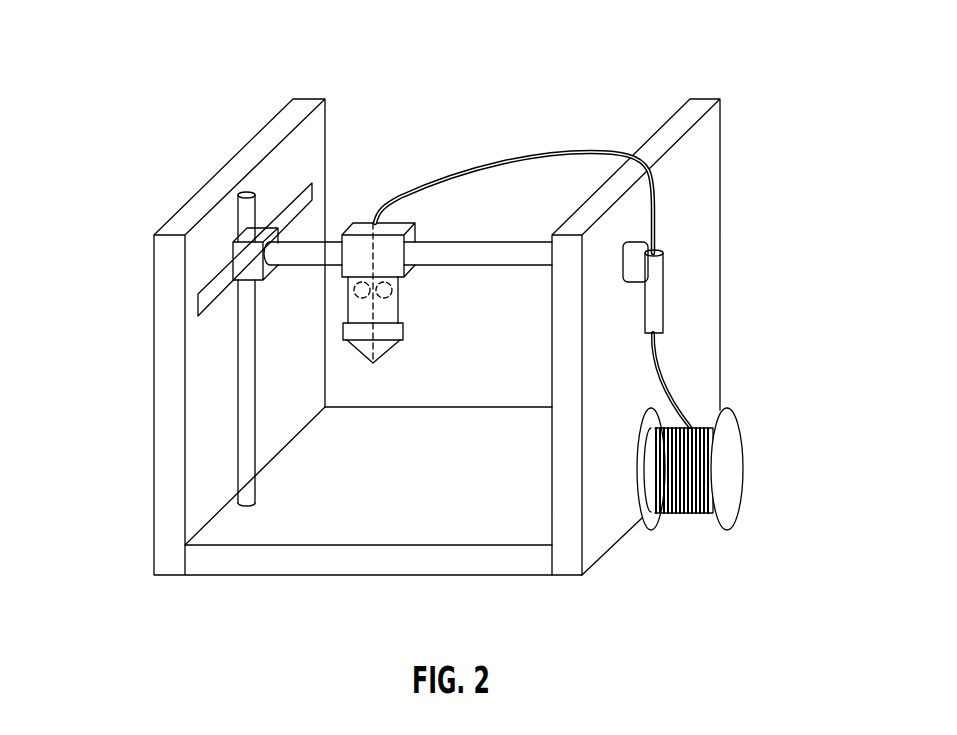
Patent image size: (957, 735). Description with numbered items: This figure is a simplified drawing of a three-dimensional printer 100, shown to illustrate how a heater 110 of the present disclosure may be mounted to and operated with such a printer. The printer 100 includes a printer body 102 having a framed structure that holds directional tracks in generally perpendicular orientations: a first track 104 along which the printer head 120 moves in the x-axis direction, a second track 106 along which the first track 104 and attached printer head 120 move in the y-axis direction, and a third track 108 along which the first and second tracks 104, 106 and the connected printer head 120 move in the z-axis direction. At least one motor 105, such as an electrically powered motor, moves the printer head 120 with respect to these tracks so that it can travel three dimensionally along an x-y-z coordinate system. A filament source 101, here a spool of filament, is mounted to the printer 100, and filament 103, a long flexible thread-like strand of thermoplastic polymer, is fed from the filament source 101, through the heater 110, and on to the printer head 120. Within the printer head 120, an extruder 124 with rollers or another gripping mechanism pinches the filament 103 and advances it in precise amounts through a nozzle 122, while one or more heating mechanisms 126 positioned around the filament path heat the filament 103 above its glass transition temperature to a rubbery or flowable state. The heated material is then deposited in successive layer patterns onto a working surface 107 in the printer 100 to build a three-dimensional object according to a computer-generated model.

The 3D printer 100 is at (137, 57).
The filament source 101 is at (727, 473).
The printer body 102 is at (702, 187).
The filament 103 is at (557, 152).
The first track 104 is at (328, 250).
The motor 105 is at (240, 255).
The second track 106 is at (308, 197).
The working surface 107 is at (310, 530).
The third track 108 is at (248, 195).
The heater 110 is at (655, 302).
The printer head 120 is at (440, 302).
The nozzle 122 is at (373, 363).
The extruder 124 is at (395, 290).
The heating mechanism 126 is at (398, 333).